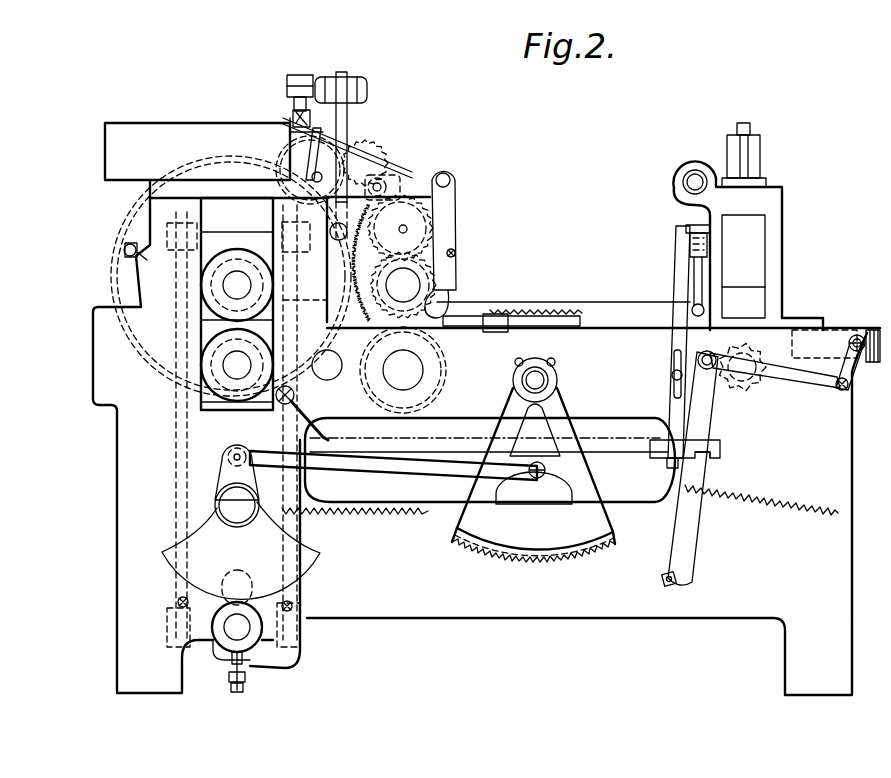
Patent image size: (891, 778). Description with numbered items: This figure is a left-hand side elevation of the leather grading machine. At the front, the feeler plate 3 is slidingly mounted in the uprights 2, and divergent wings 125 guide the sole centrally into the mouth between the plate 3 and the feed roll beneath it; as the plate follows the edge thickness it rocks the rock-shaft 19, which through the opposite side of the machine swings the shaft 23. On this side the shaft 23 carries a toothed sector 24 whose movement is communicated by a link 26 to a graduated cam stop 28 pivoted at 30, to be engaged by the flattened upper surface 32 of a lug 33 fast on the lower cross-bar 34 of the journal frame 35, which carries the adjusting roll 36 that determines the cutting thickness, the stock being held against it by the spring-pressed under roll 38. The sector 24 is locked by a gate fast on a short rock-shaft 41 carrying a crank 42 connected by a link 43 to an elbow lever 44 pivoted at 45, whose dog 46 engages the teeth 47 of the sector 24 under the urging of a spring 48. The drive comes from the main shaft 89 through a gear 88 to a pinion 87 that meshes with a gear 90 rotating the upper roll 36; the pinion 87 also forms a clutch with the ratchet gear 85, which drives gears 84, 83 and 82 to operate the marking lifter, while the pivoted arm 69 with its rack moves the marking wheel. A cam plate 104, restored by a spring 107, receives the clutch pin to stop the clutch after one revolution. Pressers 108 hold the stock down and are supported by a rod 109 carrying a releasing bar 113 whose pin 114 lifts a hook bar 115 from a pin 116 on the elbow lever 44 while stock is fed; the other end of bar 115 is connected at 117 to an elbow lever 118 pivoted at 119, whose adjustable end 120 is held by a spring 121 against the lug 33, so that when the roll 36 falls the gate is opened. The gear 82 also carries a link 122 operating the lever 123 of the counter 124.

The uprights 2 is at (782, 258).
The plate 3 is at (743, 266).
The rock-shaft 19 is at (683, 183).
The shaft 23 is at (548, 380).
The toothed sector 24 is at (548, 470).
The link 26 is at (393, 465).
The cam stop 28 is at (241, 550).
The pivot 30 is at (223, 500).
The flattened upper surface 32 is at (230, 612).
The lug 33 is at (175, 627).
The lower cross-bar 34 is at (225, 648).
The journal frame 35 is at (178, 450).
The adjusting roll 36 is at (226, 254).
The under roll 38 is at (210, 355).
The rock-shaft 41 is at (858, 334).
The crank 42 is at (850, 372).
The link 43 is at (822, 382).
The elbow lever 44 is at (692, 468).
The pivot 45 is at (680, 580).
The dog 46 is at (536, 560).
The teeth 47 is at (470, 545).
The spring 48 is at (782, 504).
The pivoted arm 69 is at (350, 117).
The gear 82 is at (380, 153).
The gear 83 is at (396, 163).
The gear 84 is at (426, 222).
The gear 85 is at (433, 260).
The pinion 87 is at (448, 268).
The gear 88 is at (442, 352).
The main shaft 89 is at (403, 329).
The gear 90 is at (125, 262).
The cam plate 104 is at (457, 210).
The spring 107 is at (457, 254).
The pressers 108 is at (556, 313).
The rod 109 is at (698, 268).
The releasing bar 113 is at (681, 293).
The pin 114 is at (665, 462).
The hook bar 115 is at (716, 445).
The pin 116 is at (704, 457).
The connection 117 is at (296, 395).
The elbow lever 118 is at (302, 545).
The pivot 119 is at (294, 606).
The adjustable end 120 is at (246, 677).
The spring 121 is at (360, 513).
The link 122 is at (347, 134).
The lever 123 is at (300, 122).
The counter 124 is at (197, 151).
The divergent wings 125 is at (873, 330).